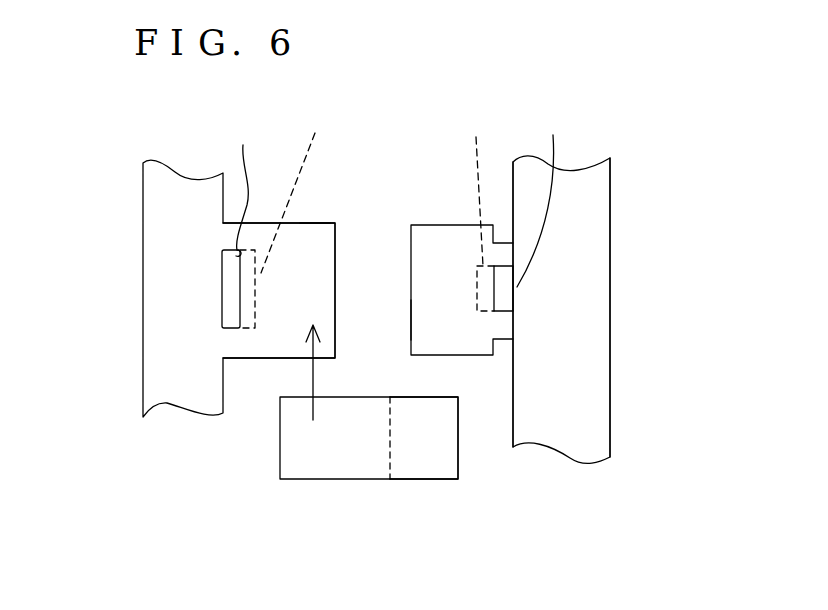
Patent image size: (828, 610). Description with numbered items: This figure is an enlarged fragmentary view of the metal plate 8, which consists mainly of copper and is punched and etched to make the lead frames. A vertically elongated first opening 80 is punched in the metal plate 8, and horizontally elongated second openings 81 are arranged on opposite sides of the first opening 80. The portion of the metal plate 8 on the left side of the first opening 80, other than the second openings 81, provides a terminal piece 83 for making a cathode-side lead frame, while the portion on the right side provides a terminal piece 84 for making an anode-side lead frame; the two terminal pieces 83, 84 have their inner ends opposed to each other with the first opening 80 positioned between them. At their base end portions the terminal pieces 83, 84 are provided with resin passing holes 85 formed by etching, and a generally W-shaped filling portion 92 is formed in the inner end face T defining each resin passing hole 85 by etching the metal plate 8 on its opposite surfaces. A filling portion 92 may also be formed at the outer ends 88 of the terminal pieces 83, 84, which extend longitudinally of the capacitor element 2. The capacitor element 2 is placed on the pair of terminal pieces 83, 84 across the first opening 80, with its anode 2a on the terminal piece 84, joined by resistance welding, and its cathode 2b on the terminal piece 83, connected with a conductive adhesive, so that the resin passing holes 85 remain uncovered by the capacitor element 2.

The capacitor element 2 is at (366, 491).
The anode 2a is at (420, 465).
The cathode 2b is at (330, 460).
The metal plate 8 is at (592, 202).
The first opening 80 is at (411, 310).
The second openings 81 is at (218, 383).
The terminal piece 83 is at (320, 277).
The terminal piece 84 is at (420, 248).
The resin passing holes 85 is at (220, 288).
The outer ends 88 is at (297, 223).
The filling portion 92 is at (375, 188).
The inner end face T is at (402, 198).